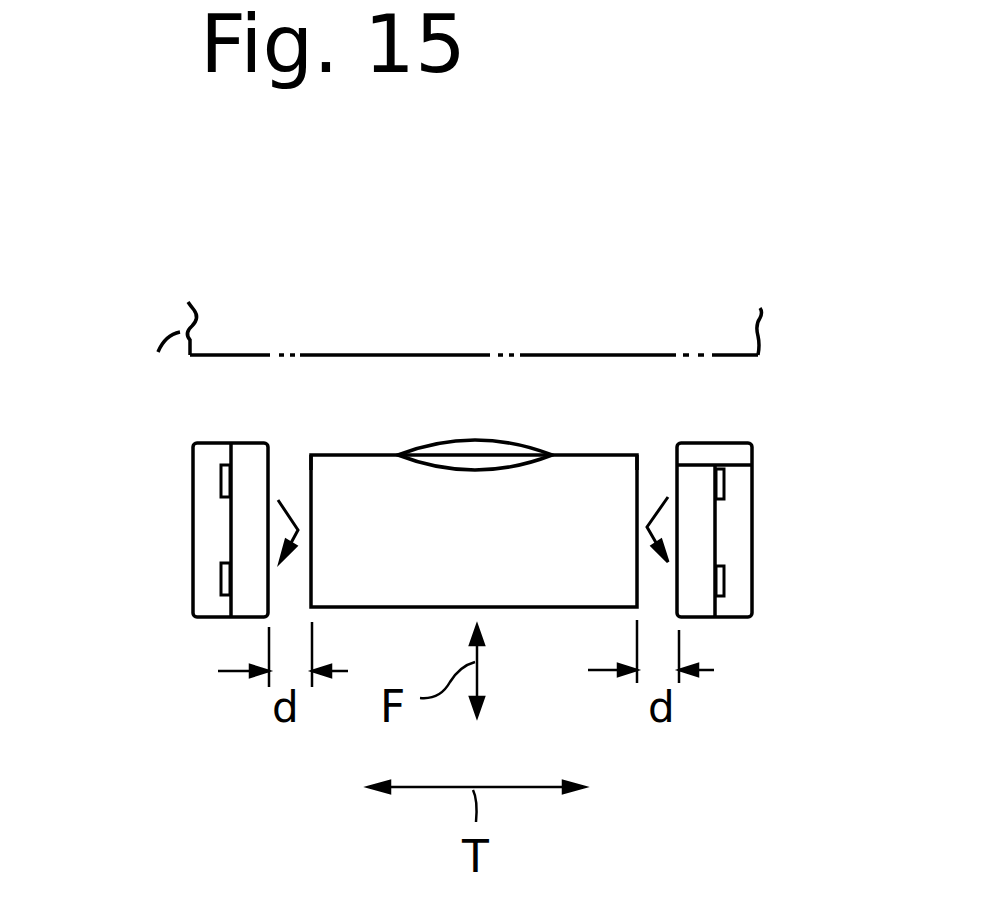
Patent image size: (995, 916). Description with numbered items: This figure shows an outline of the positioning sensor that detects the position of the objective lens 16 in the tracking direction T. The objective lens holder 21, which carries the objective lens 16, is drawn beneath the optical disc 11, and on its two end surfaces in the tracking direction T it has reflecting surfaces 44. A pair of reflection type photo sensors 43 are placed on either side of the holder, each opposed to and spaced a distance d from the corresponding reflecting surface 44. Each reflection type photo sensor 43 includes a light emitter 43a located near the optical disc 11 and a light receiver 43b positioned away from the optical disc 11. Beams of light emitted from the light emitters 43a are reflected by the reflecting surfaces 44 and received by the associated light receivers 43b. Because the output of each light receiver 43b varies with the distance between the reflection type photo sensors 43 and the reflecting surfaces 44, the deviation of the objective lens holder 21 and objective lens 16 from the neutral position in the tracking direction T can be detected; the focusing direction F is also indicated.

The optical disc 11 is at (158, 352).
The objective lens holder 21 is at (372, 497).
The objective lens 16 is at (512, 438).
The reflecting surface 44 is at (311, 472).
The reflection type photo sensor 43 is at (192, 520).
The light emitter 43a is at (722, 466).
The light receiver 43b is at (722, 587).